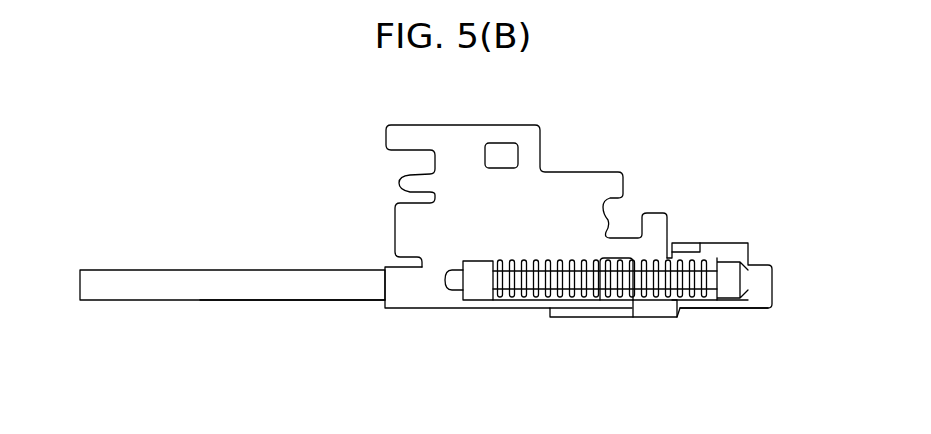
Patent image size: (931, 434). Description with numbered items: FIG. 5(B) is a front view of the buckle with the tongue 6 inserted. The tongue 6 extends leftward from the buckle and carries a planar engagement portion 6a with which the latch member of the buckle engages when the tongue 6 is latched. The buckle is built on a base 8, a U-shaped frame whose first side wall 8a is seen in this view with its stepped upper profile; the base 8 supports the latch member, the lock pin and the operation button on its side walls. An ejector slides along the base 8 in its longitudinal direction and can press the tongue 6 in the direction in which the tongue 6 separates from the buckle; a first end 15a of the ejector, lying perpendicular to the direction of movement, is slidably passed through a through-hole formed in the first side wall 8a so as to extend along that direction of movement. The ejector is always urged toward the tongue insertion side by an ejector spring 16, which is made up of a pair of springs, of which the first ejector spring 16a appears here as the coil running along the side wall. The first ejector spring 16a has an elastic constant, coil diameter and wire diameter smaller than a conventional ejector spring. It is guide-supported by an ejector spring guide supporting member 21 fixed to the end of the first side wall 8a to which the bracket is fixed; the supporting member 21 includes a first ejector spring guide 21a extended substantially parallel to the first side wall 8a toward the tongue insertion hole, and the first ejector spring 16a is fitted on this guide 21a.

The tongue 6 is at (128, 295).
The planar engagement portion 6a is at (207, 300).
The base 8 is at (575, 190).
The first side wall 8a is at (455, 143).
The first end 15a is at (482, 315).
The ejector spring 16 is at (670, 327).
The first ejector spring 16a is at (710, 322).
The ejector spring guide supporting member 21 is at (747, 287).
The first ejector spring guide 21a is at (457, 308).